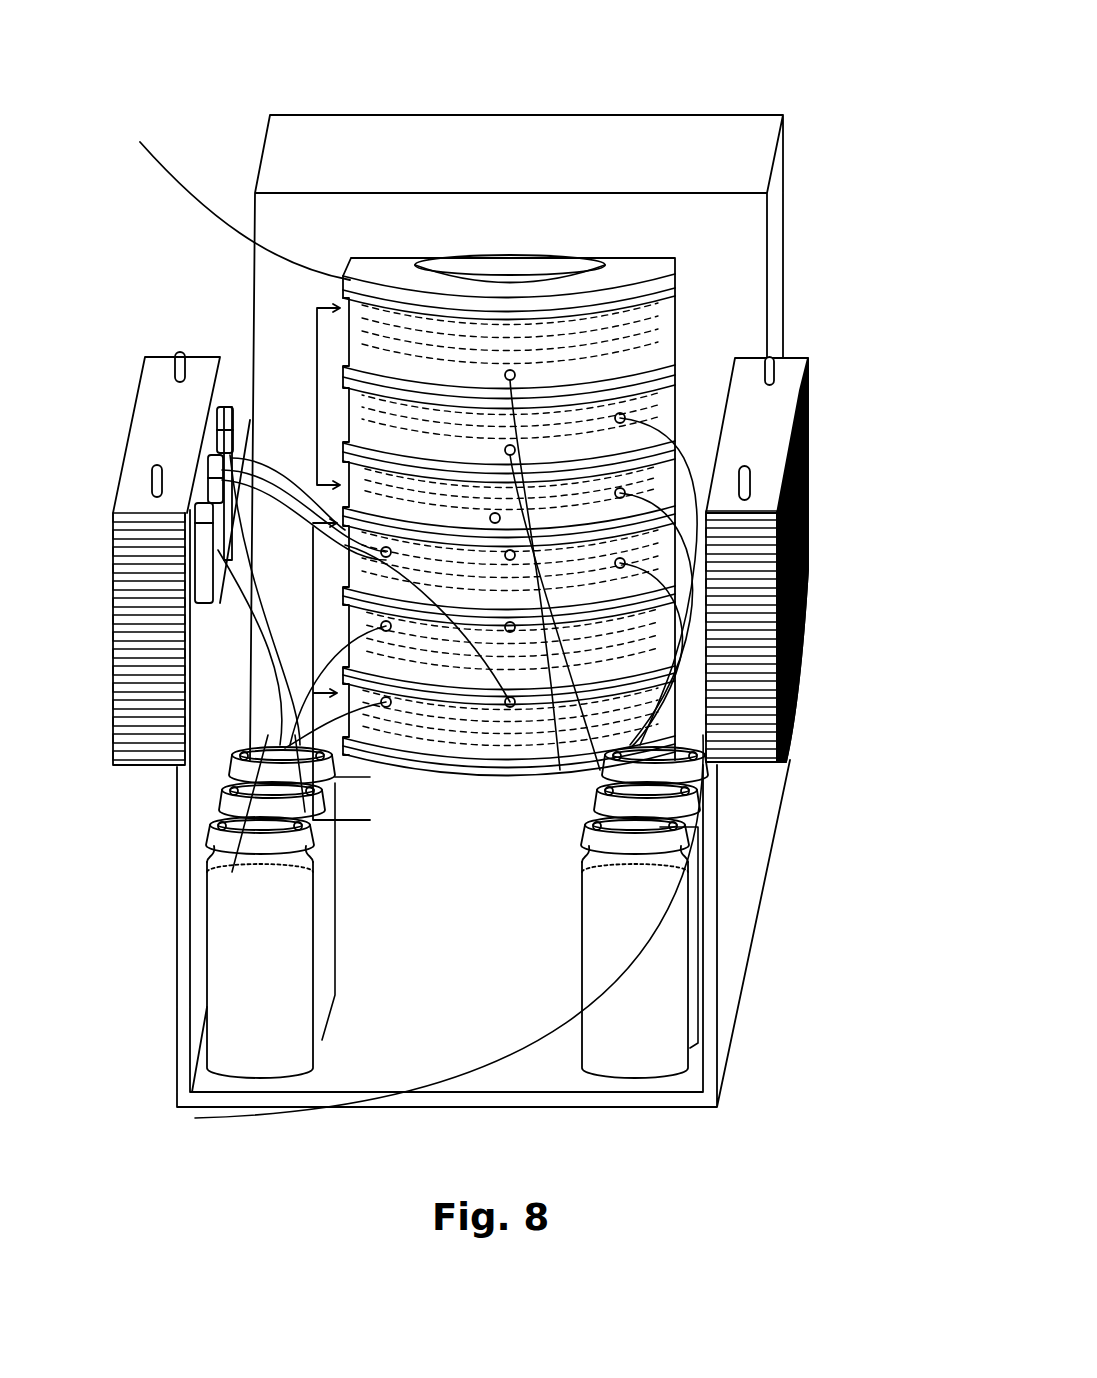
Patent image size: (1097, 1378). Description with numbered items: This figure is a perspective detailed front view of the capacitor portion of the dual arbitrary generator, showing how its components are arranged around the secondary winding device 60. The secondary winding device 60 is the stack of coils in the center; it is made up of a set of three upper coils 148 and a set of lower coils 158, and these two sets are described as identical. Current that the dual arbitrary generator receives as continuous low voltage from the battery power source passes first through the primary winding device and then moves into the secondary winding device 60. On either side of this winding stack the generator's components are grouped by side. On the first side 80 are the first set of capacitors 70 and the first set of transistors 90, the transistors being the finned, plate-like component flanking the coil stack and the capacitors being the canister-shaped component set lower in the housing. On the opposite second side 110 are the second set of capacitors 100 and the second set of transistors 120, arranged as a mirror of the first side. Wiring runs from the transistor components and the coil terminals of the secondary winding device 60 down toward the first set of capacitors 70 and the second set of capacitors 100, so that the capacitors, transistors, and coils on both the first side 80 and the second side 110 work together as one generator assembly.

The secondary winding device 60 is at (590, 340).
The first set of capacitors 70 is at (273, 1060).
The first side 80 is at (233, 243).
The first set of transistors 90 is at (167, 418).
The second set of capacitors 100 is at (630, 1043).
The second side 110 is at (820, 245).
The second set of transistors 120 is at (767, 432).
The set of 3 upper coils 148 is at (317, 357).
The set of lower coils 158 is at (313, 540).